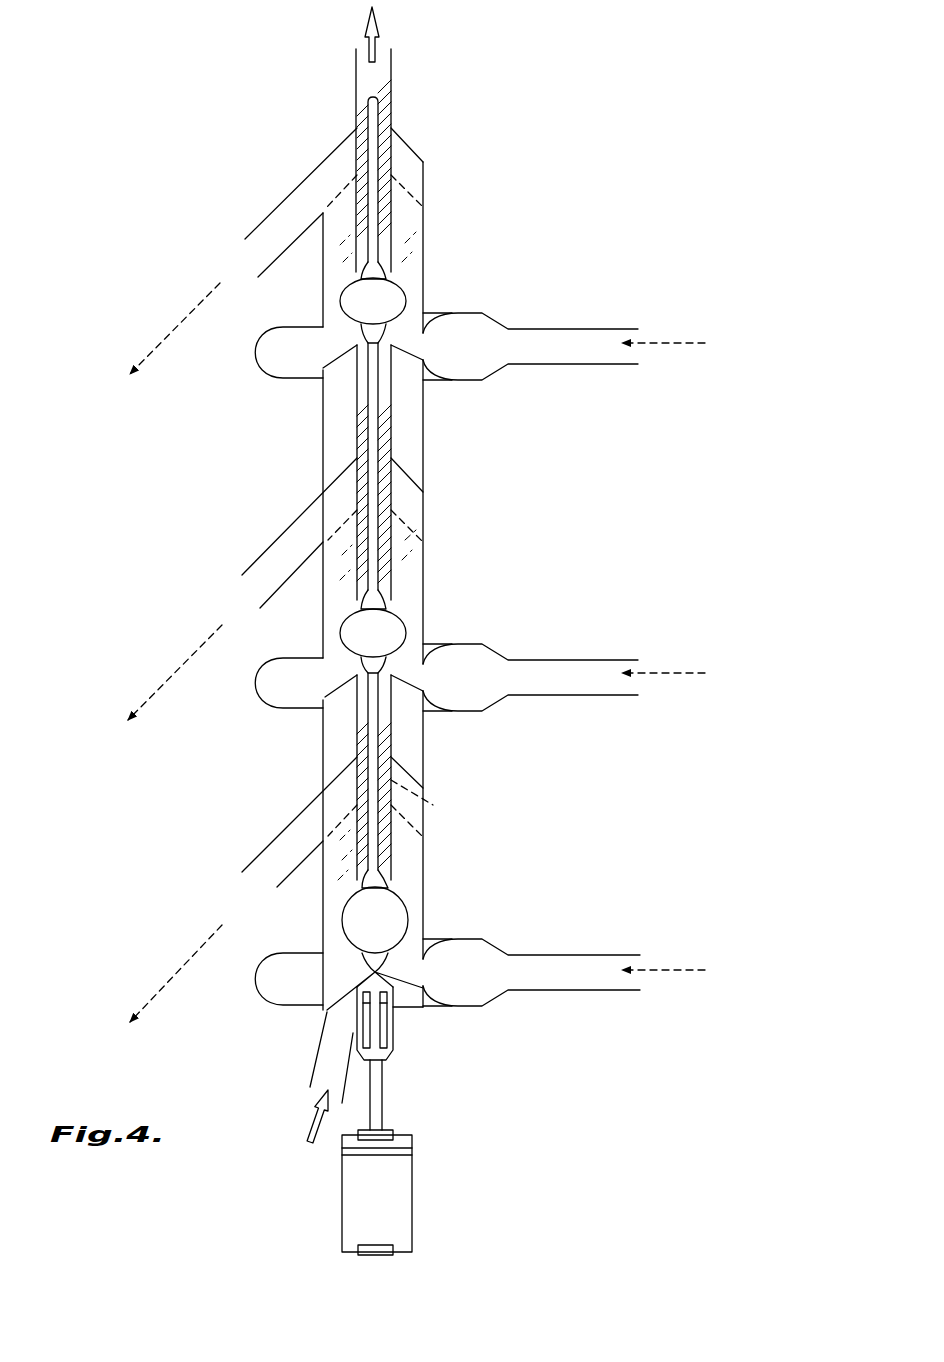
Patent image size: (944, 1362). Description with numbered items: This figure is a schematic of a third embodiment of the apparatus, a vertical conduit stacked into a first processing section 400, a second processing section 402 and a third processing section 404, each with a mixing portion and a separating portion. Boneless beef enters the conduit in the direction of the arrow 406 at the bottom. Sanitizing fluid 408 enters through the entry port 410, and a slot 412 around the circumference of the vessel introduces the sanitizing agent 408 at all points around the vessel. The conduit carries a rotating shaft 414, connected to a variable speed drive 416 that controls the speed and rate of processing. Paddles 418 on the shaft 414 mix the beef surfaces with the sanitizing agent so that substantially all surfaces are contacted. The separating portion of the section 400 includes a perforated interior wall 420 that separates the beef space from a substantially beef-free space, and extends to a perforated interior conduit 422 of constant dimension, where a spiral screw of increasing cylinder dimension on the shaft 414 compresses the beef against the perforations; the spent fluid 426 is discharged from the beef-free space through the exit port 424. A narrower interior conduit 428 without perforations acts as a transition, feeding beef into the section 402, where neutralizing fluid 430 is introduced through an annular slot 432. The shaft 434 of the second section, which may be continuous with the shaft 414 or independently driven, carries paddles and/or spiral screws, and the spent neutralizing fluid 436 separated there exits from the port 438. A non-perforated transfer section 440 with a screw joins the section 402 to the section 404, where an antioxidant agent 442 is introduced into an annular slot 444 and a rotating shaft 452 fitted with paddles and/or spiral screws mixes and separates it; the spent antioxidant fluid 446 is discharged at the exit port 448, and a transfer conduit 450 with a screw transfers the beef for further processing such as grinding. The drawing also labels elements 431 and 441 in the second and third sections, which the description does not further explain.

The first processing section 400 is at (507, 857).
The second processing section 402 is at (520, 445).
The third processing section 404 is at (450, 200).
The beef entry direction arrow 406 is at (312, 1123).
The sanitizing fluid 408 is at (673, 970).
The entry port 410 is at (543, 955).
The slot 412 is at (316, 978).
The rotating shaft 414 is at (380, 860).
The variable speed drive 416 is at (412, 1190).
The paddles 418 is at (338, 866).
The interior wall 420 is at (422, 823).
The interior conduit 422 is at (433, 805).
The exit port 424 is at (267, 845).
The spent fluid 426 is at (183, 978).
The narrower interior conduit 428 is at (357, 723).
The neutralizing fluid 430 is at (663, 672).
The valve seat 431 is at (407, 768).
The annular slot 432 is at (316, 682).
The shaft of the second section 434 is at (378, 583).
The spent neutralizing fluid 436 is at (162, 683).
The port 438 is at (275, 538).
The transfer section 440 is at (392, 383).
The packing 441 is at (393, 452).
The antioxidant agent 442 is at (683, 342).
The annular slot 444 is at (314, 353).
The spent antioxidant fluid 446 is at (197, 302).
The exit port 448 is at (298, 187).
The transfer conduit 450 is at (392, 90).
The rotating shaft 452 is at (382, 255).